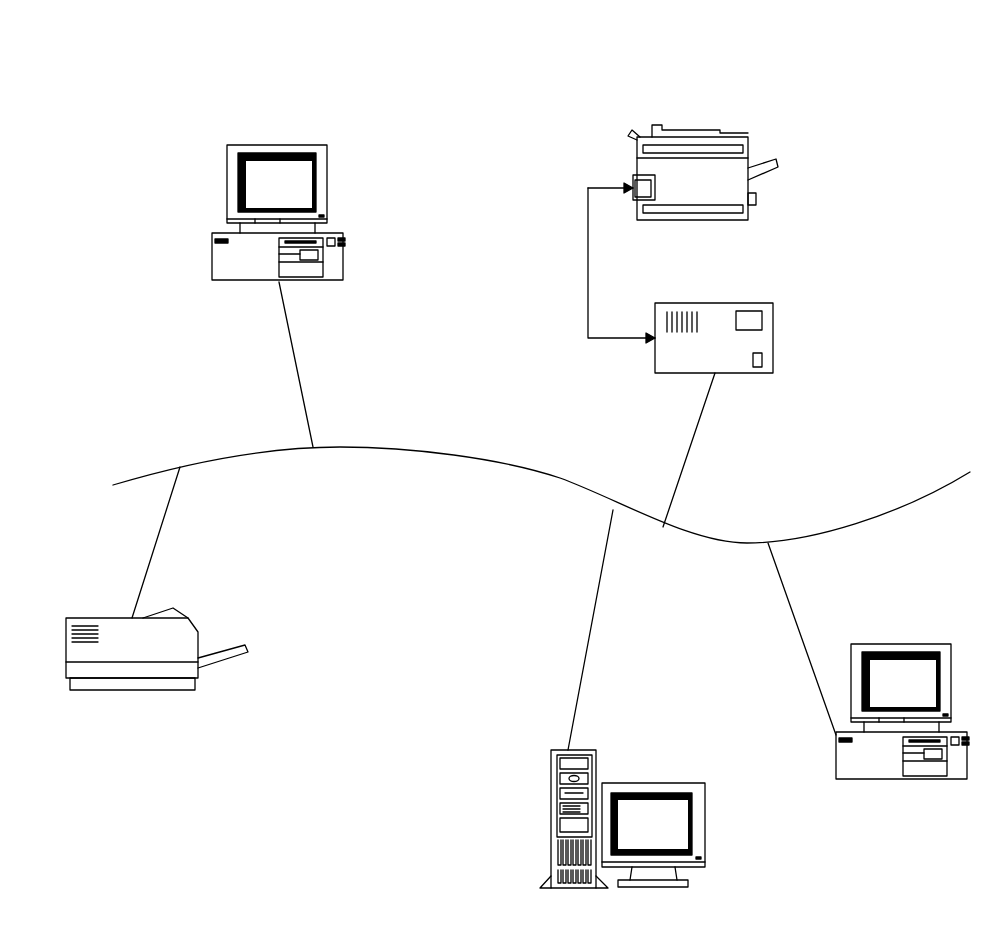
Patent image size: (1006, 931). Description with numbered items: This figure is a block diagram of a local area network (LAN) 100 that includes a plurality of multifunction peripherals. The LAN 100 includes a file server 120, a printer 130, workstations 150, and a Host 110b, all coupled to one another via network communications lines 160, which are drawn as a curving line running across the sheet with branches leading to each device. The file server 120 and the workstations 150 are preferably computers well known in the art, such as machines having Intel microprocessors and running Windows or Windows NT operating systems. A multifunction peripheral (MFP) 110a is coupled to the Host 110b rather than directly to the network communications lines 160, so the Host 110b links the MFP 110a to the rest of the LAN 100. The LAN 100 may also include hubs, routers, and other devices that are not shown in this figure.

The local area network (LAN) 100 is at (143, 403).
The multifunction peripheral (MFP) 110a is at (703, 123).
The Host 110b is at (713, 303).
The file server 120 is at (652, 783).
The printer 130 is at (132, 690).
The workstations 150 is at (277, 143).
The network communications lines 160 is at (480, 467).